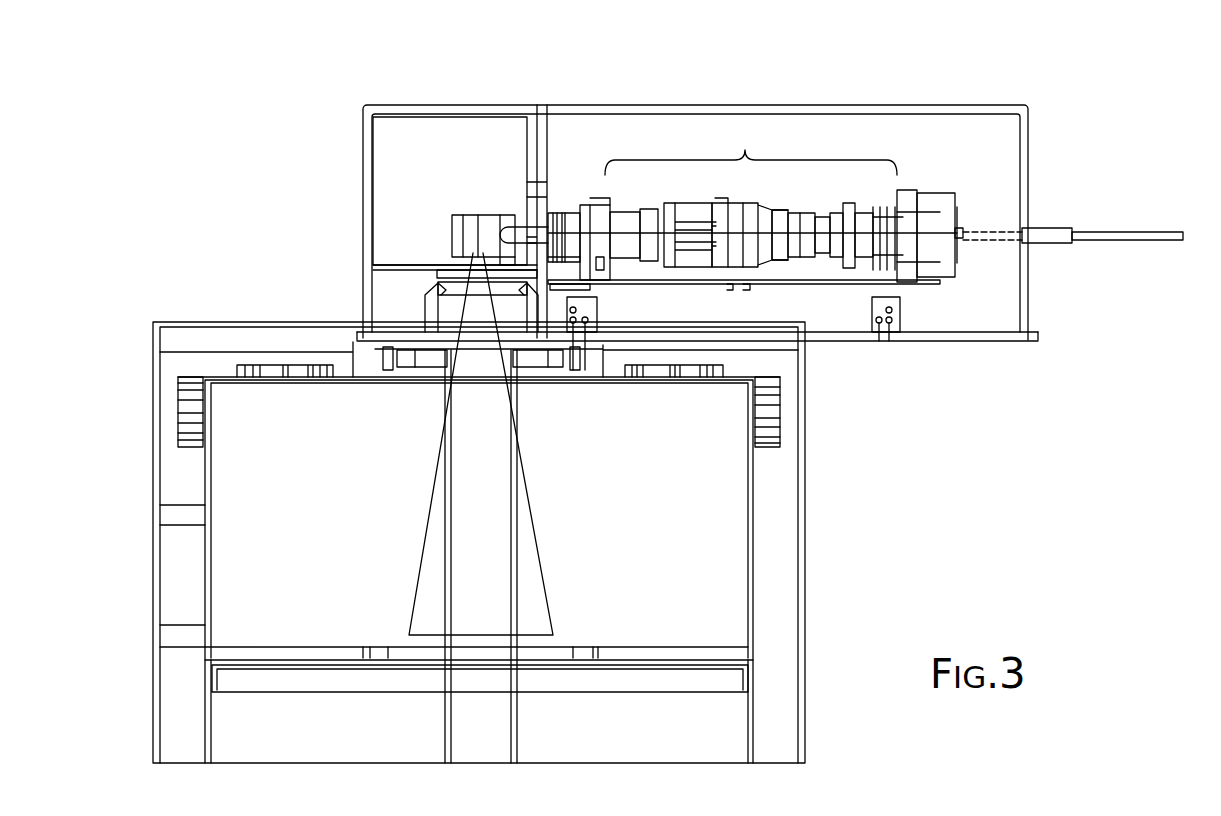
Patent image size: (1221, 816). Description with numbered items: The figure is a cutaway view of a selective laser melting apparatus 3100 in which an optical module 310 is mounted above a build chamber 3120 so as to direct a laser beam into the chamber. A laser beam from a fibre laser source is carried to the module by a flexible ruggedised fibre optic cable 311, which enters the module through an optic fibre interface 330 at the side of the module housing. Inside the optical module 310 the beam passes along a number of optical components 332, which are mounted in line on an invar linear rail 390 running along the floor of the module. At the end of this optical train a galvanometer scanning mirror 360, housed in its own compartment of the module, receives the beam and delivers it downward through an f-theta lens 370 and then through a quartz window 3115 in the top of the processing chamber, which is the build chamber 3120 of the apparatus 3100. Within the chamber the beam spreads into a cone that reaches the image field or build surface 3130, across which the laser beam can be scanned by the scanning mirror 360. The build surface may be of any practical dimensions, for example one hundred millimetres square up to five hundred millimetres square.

The selective laser melting apparatus 3100 is at (302, 172).
The optical module 310 is at (1027, 103).
The flexible ruggedised fibre optic cable 311 is at (1118, 230).
The optic fibre interface 330 is at (1028, 245).
The optical components 332 is at (745, 152).
The galvanometer scanning mirror 360 is at (445, 153).
The f-theta lens 370 is at (446, 309).
The invar linear rail 390 is at (828, 287).
The quartz window 3115 is at (533, 360).
The build chamber 3120 is at (667, 538).
The build surface 3130 is at (533, 638).